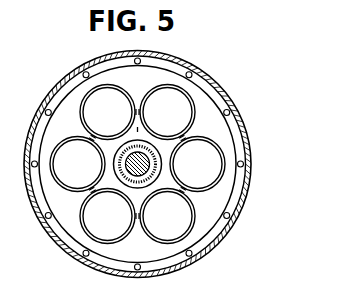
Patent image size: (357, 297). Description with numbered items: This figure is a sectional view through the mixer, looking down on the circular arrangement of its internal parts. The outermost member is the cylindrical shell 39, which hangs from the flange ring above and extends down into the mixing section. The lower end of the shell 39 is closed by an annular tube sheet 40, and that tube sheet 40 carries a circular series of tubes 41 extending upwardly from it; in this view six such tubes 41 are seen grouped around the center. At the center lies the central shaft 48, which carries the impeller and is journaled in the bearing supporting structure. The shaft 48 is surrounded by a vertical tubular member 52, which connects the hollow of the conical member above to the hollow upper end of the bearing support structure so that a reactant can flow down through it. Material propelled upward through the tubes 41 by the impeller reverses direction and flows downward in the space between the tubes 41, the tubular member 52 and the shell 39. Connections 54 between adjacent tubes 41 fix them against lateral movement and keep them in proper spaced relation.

The cylindrical shell 39 is at (218, 99).
The annular tube sheet 40 is at (221, 136).
The tubes 41 is at (162, 87).
The central shaft 48 is at (113, 164).
The vertical tubular member 52 is at (162, 164).
The connections 54 is at (90, 134).